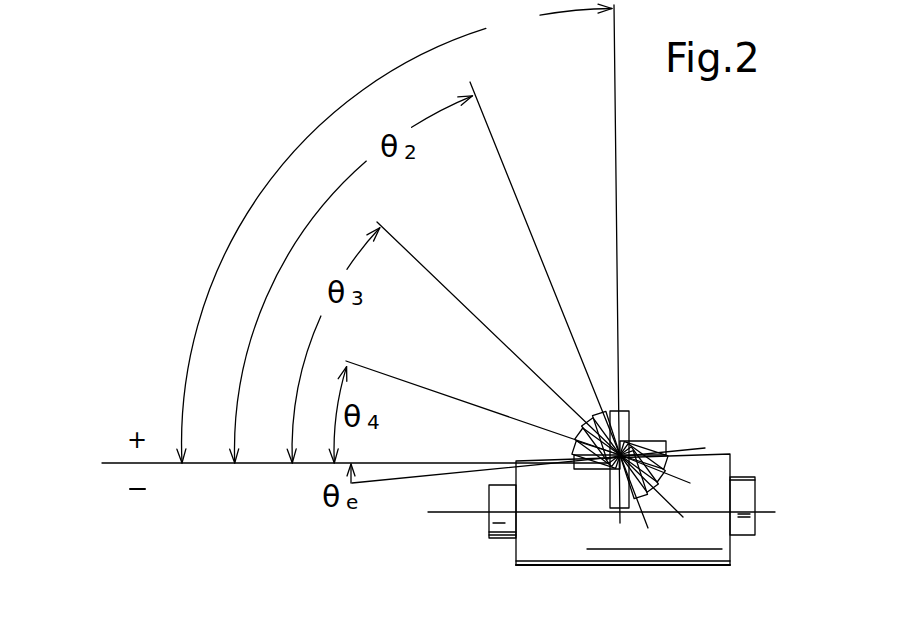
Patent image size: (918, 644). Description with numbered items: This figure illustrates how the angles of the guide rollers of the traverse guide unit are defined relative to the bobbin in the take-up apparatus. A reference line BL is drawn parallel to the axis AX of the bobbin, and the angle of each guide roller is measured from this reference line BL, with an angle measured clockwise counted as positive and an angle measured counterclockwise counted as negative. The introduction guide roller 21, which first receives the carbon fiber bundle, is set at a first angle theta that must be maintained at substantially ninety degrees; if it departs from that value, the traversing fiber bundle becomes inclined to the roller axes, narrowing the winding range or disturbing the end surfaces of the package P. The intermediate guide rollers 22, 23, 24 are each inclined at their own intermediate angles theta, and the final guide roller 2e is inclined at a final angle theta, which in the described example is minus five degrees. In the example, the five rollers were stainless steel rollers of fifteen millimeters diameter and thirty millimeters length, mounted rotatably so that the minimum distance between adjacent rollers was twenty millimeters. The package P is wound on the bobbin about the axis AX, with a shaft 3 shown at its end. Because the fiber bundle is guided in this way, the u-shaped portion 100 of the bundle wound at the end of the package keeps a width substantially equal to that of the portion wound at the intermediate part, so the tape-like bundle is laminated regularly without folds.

The u-shaped portion 100 is at (376, 231).
The introduction guide roller 21 is at (630, 423).
The intermediate guide roller 22 is at (605, 425).
The intermediate guide roller 23 is at (585, 427).
The intermediate guide roller 24 is at (572, 442).
The final guide roller 2e is at (657, 443).
The shaft 3 is at (500, 538).
The package P is at (595, 565).
The axis of a bobbin AX is at (443, 515).
The reference line BL is at (117, 465).